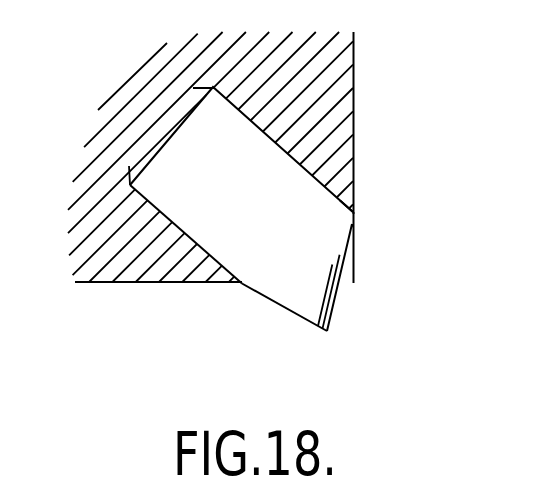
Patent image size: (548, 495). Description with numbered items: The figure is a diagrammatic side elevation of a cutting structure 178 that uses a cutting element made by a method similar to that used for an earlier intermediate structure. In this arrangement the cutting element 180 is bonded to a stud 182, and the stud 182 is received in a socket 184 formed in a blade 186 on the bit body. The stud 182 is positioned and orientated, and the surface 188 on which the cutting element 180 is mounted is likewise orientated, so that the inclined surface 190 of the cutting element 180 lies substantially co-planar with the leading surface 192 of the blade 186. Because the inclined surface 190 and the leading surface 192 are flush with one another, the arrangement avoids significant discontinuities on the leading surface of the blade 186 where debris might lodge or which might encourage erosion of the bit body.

The cutting structure 178 is at (362, 210).
The cutting element 180 is at (336, 277).
The stud 182 is at (230, 235).
The socket 184 is at (170, 228).
The blade 186 is at (323, 76).
The surface 188 is at (311, 300).
The inclined surface 190 is at (355, 249).
The leading surface 192 is at (354, 142).